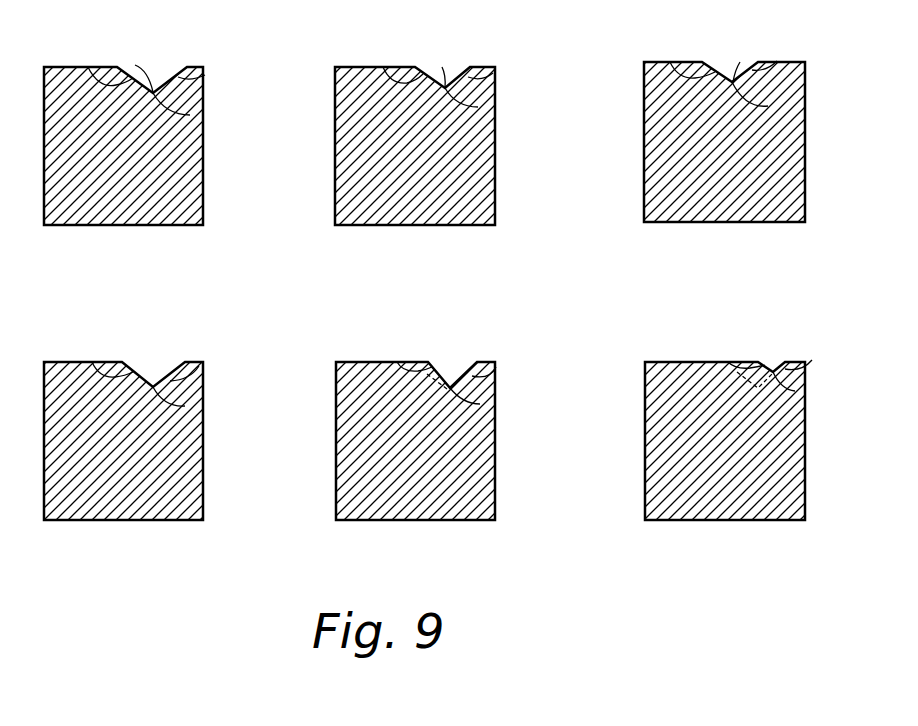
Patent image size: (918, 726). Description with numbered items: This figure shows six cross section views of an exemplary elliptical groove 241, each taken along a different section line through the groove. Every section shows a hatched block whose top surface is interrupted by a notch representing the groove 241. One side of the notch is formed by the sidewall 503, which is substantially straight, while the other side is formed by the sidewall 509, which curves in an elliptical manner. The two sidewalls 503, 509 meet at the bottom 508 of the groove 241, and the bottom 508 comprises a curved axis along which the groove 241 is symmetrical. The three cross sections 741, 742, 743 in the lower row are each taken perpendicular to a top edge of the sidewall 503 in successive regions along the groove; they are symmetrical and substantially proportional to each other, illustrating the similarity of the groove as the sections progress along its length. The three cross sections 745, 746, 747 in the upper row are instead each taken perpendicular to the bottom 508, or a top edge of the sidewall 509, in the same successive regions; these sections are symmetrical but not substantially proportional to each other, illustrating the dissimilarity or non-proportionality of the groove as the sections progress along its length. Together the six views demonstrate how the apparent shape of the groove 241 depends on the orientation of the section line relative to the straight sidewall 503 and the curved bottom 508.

The groove 241 is at (160, 57).
The sidewall 503 is at (205, 75).
The bottom 508 is at (190, 115).
The sidewall 509 is at (88, 67).
The cross section 741 is at (103, 522).
The cross section 742 is at (375, 522).
The cross section 743 is at (700, 522).
The cross section 745 is at (98, 227).
The cross section 746 is at (373, 226).
The cross section 747 is at (685, 223).